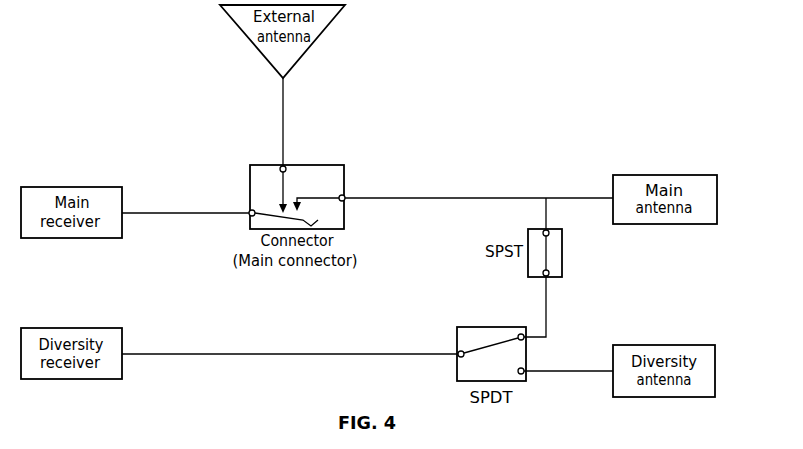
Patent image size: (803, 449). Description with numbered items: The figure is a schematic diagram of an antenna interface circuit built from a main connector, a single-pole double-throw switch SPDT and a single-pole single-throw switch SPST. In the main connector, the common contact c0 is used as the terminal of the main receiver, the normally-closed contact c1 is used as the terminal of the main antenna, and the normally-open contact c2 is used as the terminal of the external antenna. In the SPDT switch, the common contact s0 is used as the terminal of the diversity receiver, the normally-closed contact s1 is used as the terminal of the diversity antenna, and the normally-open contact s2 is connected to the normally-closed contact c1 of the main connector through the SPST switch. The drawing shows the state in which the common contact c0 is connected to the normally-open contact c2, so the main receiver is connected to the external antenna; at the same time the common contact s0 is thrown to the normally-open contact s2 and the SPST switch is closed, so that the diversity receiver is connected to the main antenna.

The common contact of the main connector c0 is at (241, 205).
The normally-closed contact of the main connector c1 is at (350, 190).
The normally-open contact of the main connector c2 is at (291, 159).
The common contact of the single-pole double-throw switch s0 is at (450, 346).
The normally-closed contact of the single-pole double-throw switch s1 is at (531, 364).
The normally-open contact of the single-pole double-throw switch s2 is at (531, 328).